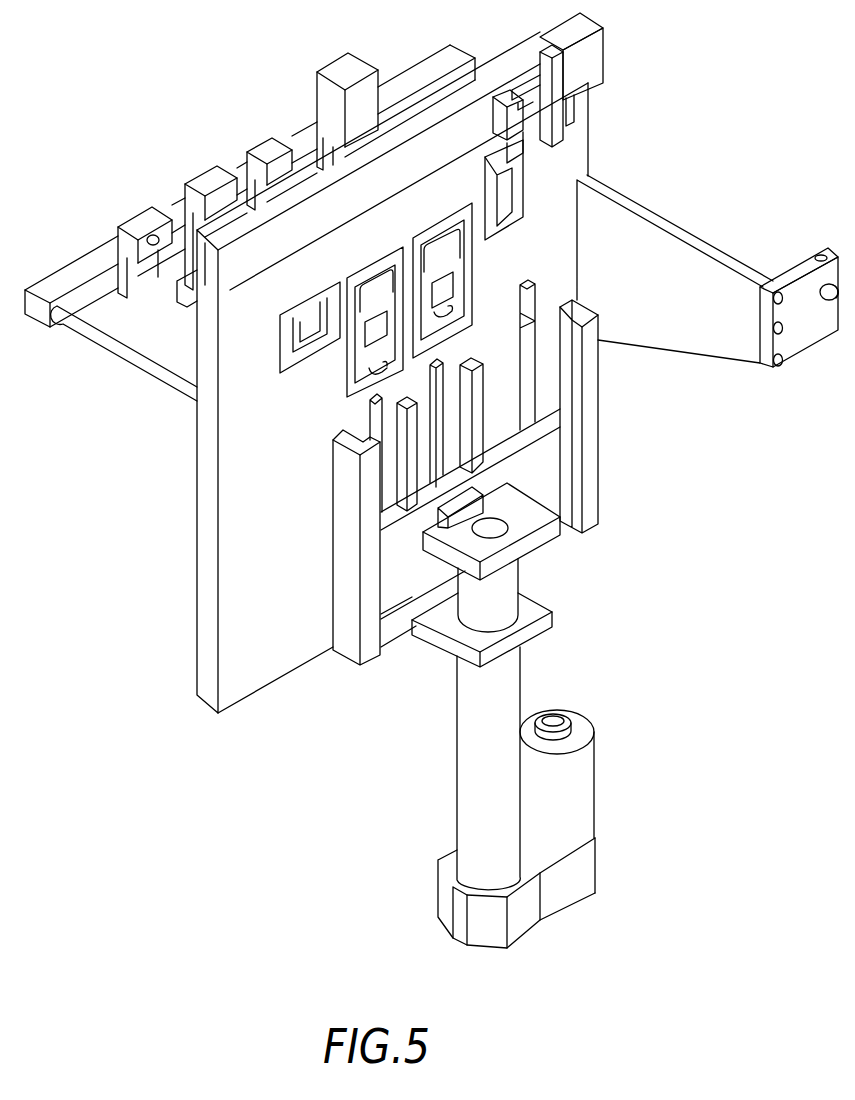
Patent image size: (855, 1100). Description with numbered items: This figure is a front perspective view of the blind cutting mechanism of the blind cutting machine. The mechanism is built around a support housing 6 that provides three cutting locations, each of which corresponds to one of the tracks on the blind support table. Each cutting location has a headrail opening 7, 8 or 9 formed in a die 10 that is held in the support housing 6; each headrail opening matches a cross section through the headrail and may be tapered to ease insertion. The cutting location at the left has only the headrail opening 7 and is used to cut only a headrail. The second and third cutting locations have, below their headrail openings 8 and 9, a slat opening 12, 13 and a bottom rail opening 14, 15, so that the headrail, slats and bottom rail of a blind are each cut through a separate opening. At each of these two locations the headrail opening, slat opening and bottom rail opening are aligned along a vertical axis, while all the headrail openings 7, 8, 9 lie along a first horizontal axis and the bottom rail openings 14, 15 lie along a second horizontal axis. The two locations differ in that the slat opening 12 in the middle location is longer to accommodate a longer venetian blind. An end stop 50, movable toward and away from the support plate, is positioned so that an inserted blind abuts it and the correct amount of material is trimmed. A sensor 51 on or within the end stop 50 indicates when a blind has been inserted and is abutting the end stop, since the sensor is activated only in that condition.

The support housing 6 is at (205, 602).
The headrail opening 7 is at (288, 344).
The headrail opening 8 is at (373, 288).
The headrail opening 9 is at (442, 257).
The die 10 is at (360, 272).
The slat opening 12 is at (368, 332).
The slat opening 13 is at (452, 286).
The bottom rail opening 14 is at (372, 372).
The bottom rail opening 15 is at (452, 309).
The end stop 50 is at (147, 218).
The sensor 51 is at (148, 240).